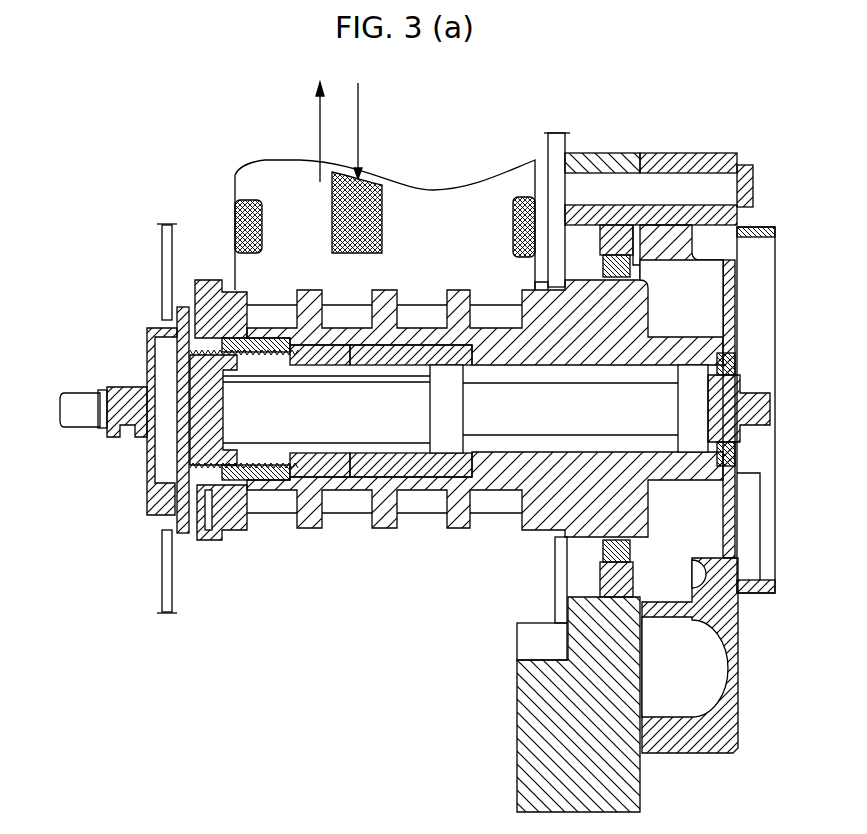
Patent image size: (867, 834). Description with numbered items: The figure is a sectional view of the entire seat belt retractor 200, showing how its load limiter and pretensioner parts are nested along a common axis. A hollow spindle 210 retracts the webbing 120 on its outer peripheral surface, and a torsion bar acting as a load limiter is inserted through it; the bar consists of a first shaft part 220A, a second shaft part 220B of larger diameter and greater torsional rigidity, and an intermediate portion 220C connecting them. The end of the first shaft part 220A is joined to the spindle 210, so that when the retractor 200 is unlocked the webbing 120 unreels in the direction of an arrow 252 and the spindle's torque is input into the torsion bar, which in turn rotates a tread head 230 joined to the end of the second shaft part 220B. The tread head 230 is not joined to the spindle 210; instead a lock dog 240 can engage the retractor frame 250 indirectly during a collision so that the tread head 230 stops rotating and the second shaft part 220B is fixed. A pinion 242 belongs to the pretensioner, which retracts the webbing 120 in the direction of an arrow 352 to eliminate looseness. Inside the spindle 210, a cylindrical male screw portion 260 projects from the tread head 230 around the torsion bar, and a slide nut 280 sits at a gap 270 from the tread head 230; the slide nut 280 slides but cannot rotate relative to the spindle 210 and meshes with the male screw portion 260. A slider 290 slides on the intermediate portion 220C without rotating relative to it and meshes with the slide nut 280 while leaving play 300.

The webbing 120 is at (490, 198).
The seat belt retractor 200 is at (291, 727).
The spindle 210 is at (262, 337).
The first shaft part 220A is at (497, 417).
The second shaft part 220B is at (262, 424).
The intermediate portion 220C is at (443, 437).
The tread head 230 is at (155, 498).
The lock dog 240 is at (203, 345).
The pinion 242 is at (693, 755).
The retractor frame 250 is at (163, 570).
The arrow 252 is at (318, 118).
The male screw portion 260 is at (205, 365).
The gap 270 is at (203, 360).
The slide nut 280 is at (237, 337).
The slider 290 is at (408, 340).
The play 300 is at (343, 350).
The arrow 352 is at (358, 108).